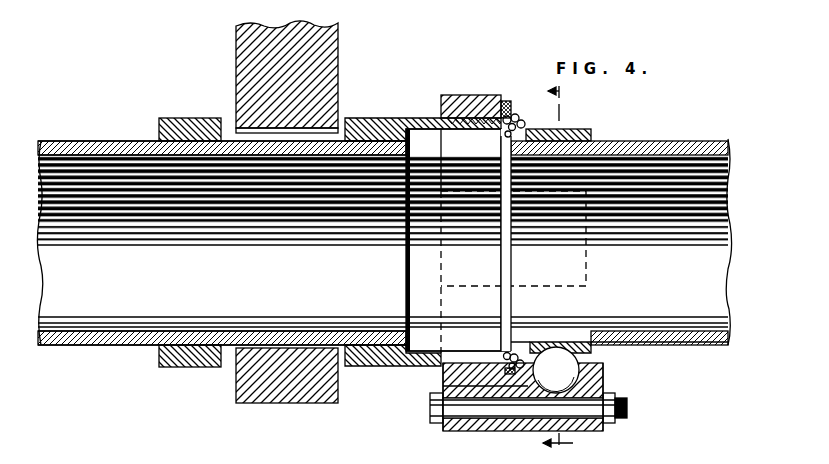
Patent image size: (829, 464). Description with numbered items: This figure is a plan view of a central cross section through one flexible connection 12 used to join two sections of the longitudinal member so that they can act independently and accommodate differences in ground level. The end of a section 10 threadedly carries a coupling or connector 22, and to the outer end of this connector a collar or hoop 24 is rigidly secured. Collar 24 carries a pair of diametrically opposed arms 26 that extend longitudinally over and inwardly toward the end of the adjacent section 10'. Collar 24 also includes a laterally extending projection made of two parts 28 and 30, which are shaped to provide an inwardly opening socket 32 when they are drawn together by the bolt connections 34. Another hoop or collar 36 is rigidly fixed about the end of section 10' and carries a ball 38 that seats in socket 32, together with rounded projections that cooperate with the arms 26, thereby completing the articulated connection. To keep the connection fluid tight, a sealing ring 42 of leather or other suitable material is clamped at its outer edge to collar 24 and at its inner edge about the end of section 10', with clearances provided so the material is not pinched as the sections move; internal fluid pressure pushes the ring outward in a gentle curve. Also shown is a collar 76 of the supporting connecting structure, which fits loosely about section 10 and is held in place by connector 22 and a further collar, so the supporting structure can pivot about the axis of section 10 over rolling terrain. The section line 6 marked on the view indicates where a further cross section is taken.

The section 10 is at (266, 217).
The adjacent section 10' is at (621, 218).
The flexible connection 12 is at (473, 76).
The coupling or connector 22 is at (381, 105).
The collar or hoop 24 is at (444, 87).
The arms 26 is at (550, 401).
The projection part 28 is at (518, 425).
The projection part 30 is at (574, 426).
The socket 32 is at (598, 370).
The bolt connections 34 is at (621, 408).
The collar or hoop 36 is at (540, 121).
The ball 38 is at (590, 357).
The sealing ring 42 is at (501, 92).
The section line 6 is at (558, 264).
The collar 76 is at (228, 60).